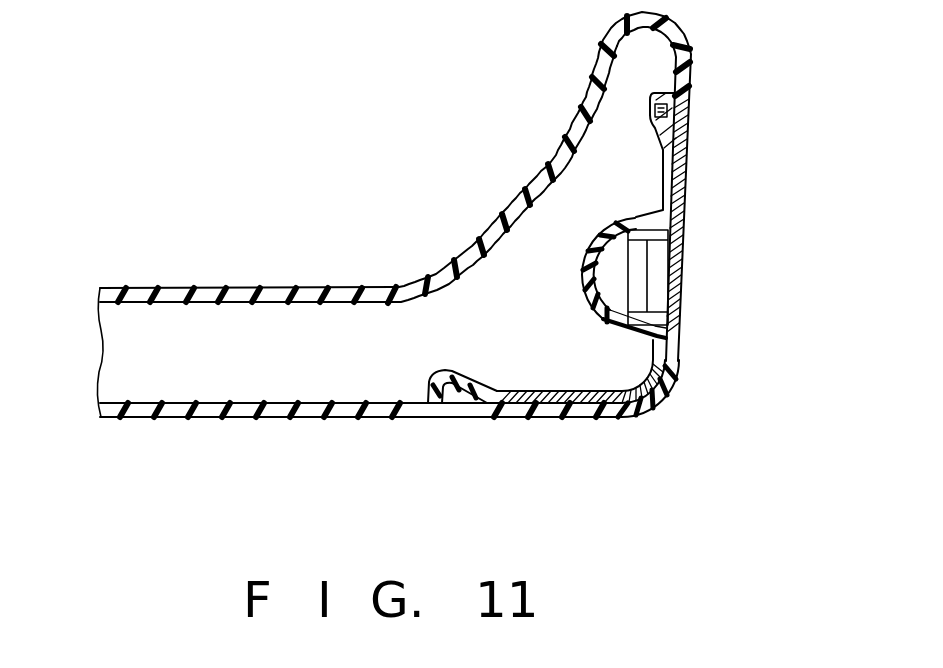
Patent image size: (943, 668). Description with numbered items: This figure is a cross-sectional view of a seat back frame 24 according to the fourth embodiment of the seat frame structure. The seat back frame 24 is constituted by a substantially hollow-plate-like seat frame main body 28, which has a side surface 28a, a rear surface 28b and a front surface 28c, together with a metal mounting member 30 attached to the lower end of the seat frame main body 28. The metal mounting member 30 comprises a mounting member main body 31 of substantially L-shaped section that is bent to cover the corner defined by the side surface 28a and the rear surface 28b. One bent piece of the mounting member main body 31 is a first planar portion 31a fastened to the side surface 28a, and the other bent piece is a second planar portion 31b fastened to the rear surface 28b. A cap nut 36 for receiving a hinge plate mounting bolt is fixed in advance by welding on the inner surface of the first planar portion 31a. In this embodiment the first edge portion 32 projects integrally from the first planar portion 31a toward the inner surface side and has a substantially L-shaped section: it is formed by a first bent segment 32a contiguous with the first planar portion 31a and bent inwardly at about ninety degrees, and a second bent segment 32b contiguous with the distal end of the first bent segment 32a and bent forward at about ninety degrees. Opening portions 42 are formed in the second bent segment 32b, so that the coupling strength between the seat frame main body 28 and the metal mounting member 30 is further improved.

The seat back frame 24 is at (457, 273).
The seat frame main body 28 is at (435, 273).
The side surface 28a is at (693, 50).
The rear surface 28b is at (361, 449).
The front surface 28c is at (363, 287).
The metal mounting member 30 is at (652, 399).
The mounting member main body 31 is at (652, 317).
The first planar portion 31a is at (690, 207).
The second planar portion 31b is at (558, 418).
The first edge portion 32 is at (615, 290).
The first bent segment 32a is at (690, 132).
The second bent segment 32b is at (660, 110).
The cap nut 36 is at (650, 280).
The opening portion 42 is at (690, 107).